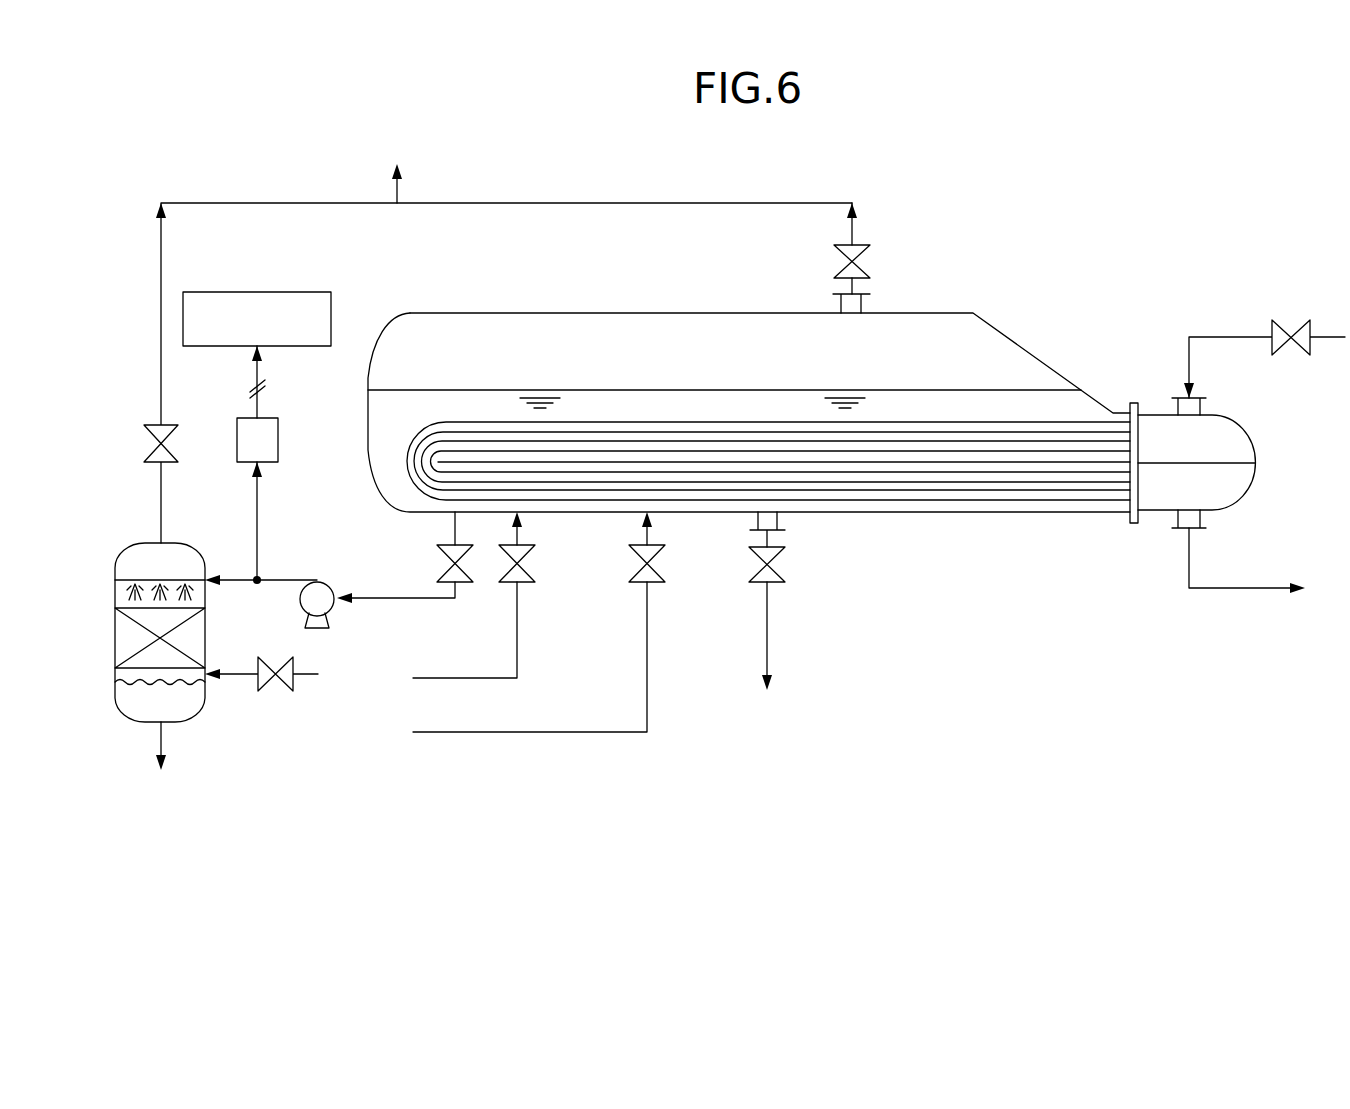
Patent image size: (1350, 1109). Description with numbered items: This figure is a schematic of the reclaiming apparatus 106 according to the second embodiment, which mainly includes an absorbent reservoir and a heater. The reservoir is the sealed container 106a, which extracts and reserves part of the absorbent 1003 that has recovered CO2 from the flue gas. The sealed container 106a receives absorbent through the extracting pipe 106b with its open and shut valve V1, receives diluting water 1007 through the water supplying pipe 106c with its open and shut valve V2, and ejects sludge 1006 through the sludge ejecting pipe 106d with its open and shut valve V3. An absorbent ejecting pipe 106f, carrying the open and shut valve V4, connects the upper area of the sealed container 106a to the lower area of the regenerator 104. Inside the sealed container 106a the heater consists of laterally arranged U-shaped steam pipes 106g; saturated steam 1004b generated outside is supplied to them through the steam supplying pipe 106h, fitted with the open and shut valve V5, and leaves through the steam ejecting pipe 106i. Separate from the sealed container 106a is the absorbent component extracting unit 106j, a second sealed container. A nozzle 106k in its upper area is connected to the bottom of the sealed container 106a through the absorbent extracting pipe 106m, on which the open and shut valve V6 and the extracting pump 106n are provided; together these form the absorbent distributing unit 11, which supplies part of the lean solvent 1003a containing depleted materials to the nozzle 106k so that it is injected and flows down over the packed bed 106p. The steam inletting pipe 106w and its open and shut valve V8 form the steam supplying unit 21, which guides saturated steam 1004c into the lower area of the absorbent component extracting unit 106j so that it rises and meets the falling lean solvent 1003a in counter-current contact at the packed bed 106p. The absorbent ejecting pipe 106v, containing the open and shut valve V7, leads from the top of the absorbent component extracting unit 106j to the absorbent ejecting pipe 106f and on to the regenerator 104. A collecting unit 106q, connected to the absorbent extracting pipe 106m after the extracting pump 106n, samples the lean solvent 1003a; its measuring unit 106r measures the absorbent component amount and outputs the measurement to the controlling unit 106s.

The regenerator 104 is at (398, 170).
The reclaiming apparatus 106 is at (1030, 335).
The sealed container 106a is at (928, 313).
The extracting pipe 106b is at (475, 675).
The water supplying pipe 106c is at (578, 730).
The sludge ejecting pipe 106d is at (769, 597).
The absorbent ejecting pipe 106f is at (836, 296).
The steam pipes 106g is at (1030, 500).
The steam supplying pipe 106h is at (1210, 337).
The steam ejecting pipe 106i is at (1215, 590).
The absorbent component extracting unit 106j is at (160, 730).
The nozzle 106k is at (145, 583).
The absorbent extracting pipe 106m is at (412, 600).
The extracting pump 106n is at (322, 582).
The packed bed 106p is at (113, 644).
The collecting unit 106q is at (259, 497).
The measuring unit 106r is at (275, 416).
The controlling unit 106s is at (280, 290).
The absorbent ejecting pipe 106v is at (163, 240).
The steam inletting pipe 106w is at (242, 672).
The absorbent distributing unit 11 is at (369, 610).
The steam supplying unit 21 is at (165, 661).
The absorbent 1003 is at (225, 592).
The lean solvent 1003a is at (418, 402).
The saturated steam 1004b is at (1265, 353).
The saturated steam 1004c is at (250, 692).
The sludge 1006 is at (753, 615).
The diluting water 1007 is at (462, 742).
The open and shut valve V1 is at (536, 563).
The open and shut valve V2 is at (666, 565).
The open and shut valve V3 is at (786, 558).
The open and shut valve V4 is at (833, 250).
The open and shut valve V5 is at (1285, 322).
The open and shut valve V6 is at (436, 555).
The open and shut valve V7 is at (170, 445).
The open and shut valve V8 is at (295, 662).